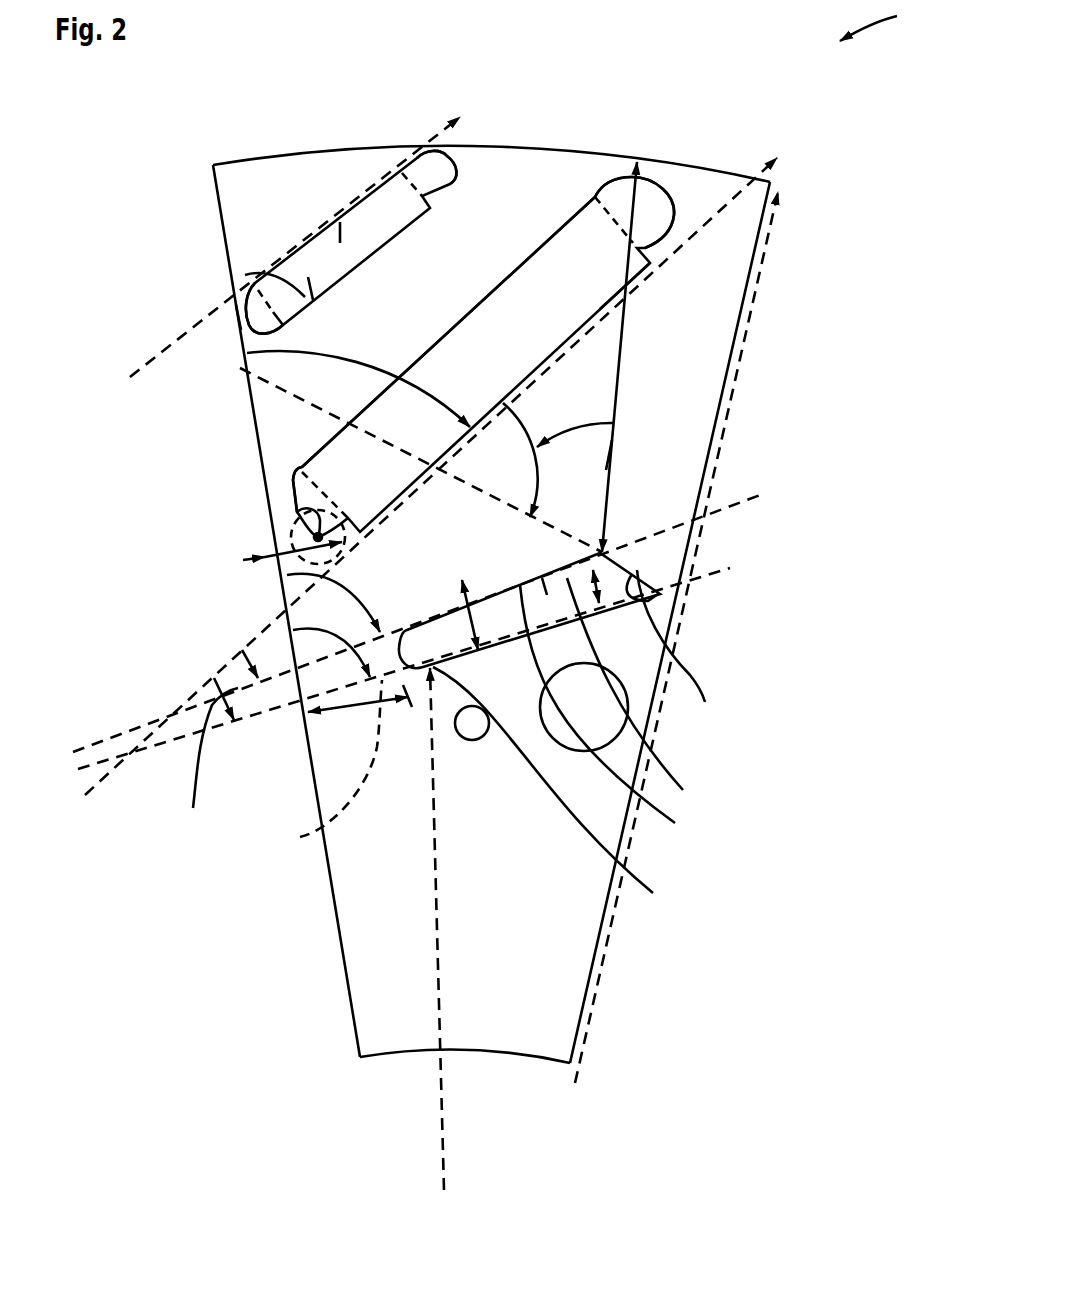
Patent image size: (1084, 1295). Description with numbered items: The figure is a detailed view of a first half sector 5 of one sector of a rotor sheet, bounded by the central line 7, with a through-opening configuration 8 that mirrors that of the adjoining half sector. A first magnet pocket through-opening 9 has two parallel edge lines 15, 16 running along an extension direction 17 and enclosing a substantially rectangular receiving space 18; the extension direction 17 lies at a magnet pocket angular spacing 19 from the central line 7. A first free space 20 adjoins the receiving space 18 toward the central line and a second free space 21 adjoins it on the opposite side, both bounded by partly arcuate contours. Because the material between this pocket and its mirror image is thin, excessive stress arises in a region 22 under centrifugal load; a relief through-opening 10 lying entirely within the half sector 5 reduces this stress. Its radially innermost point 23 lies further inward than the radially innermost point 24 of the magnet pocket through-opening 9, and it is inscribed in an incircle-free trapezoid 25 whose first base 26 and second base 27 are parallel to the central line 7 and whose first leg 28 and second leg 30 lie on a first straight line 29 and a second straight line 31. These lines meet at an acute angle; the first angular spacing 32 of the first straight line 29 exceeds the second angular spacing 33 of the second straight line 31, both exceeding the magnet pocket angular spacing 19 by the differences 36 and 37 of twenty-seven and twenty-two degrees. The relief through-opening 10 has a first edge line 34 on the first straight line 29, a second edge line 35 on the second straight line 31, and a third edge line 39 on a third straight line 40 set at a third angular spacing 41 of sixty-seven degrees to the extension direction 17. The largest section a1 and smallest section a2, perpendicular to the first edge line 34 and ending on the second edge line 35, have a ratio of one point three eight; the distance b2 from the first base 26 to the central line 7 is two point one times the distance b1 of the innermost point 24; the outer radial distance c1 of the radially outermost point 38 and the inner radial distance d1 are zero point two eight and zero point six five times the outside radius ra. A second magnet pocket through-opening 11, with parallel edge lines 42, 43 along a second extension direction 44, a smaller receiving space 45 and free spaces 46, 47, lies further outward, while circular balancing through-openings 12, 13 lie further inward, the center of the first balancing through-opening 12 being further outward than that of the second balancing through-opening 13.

The first half sector 5 is at (878, 20).
The central line 7 is at (213, 212).
The through-opening configuration 8 is at (257, 178).
The first magnet pocket through-opening 9 is at (555, 212).
The relief through-opening 10 is at (573, 552).
The second magnet pocket through-opening 11 is at (330, 197).
The first balancing through-opening 12 is at (683, 762).
The second balancing through-opening 13 is at (560, 789).
The edge line 15 is at (600, 307).
The edge line 16 is at (517, 287).
The extension direction 17 is at (720, 190).
The receiving space 18 is at (400, 418).
The magnet pocket angular spacing 19 is at (357, 363).
The first free space 20 is at (296, 495).
The second free space 21 is at (652, 192).
The region 22 is at (291, 542).
The radially innermost point 23 is at (487, 750).
The radially innermost point 24 is at (302, 515).
The trapezoid 25 is at (640, 543).
The first base 26 is at (324, 769).
The second base 27 is at (657, 573).
The first leg 28 is at (682, 647).
The first straight line 29 is at (660, 587).
The second leg 30 is at (637, 693).
The second straight line 31 is at (730, 507).
The first angular spacing 32 is at (343, 640).
The second angular spacing 33 is at (350, 608).
The first edge line 34 is at (610, 711).
The second edge line 35 is at (628, 732).
The difference 36 is at (203, 768).
The difference 37 is at (245, 652).
The radially outermost point 38 is at (620, 520).
The third edge line 39 is at (622, 605).
The third straight line 40 is at (670, 587).
The third angular spacing 41 is at (618, 428).
The edge line 42 is at (245, 275).
The edge line 43 is at (338, 222).
The second extension direction 44 is at (438, 108).
The receiving space 45 is at (327, 260).
The free space 46 is at (240, 318).
The free space 47 is at (441, 155).
The largest section a1 is at (588, 590).
The smallest section a2 is at (480, 640).
The distance b1 is at (293, 573).
The distance b2 is at (363, 697).
The outer radial distance c1 is at (620, 347).
The inner radial distance d1 is at (445, 1165).
The outside radius ra is at (585, 1033).